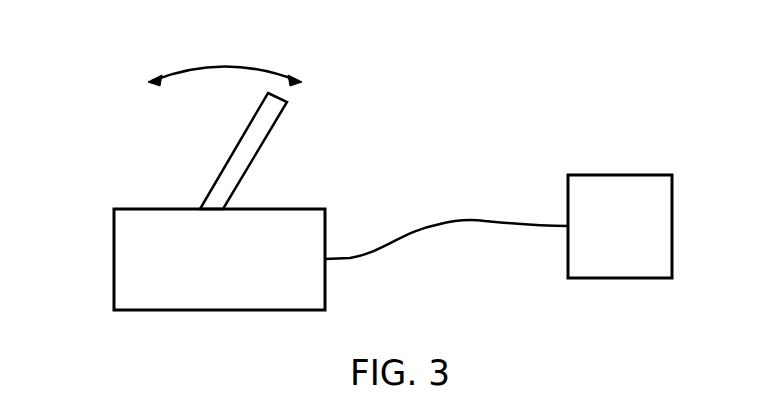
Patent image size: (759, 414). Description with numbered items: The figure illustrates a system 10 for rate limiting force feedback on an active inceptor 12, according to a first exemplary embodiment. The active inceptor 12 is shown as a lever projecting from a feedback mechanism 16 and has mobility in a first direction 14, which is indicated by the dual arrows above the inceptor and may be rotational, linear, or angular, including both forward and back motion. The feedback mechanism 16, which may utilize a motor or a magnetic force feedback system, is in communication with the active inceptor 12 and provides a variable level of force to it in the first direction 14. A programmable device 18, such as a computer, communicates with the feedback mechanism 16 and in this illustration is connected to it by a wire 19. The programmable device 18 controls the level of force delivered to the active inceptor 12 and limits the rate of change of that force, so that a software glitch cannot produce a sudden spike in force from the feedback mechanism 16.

The system 10 is at (427, 118).
The active inceptor 12 is at (227, 155).
The first direction 14 is at (232, 67).
The feedback mechanism 16 is at (113, 277).
The programmable device 18 is at (673, 223).
The wire 19 is at (440, 227).